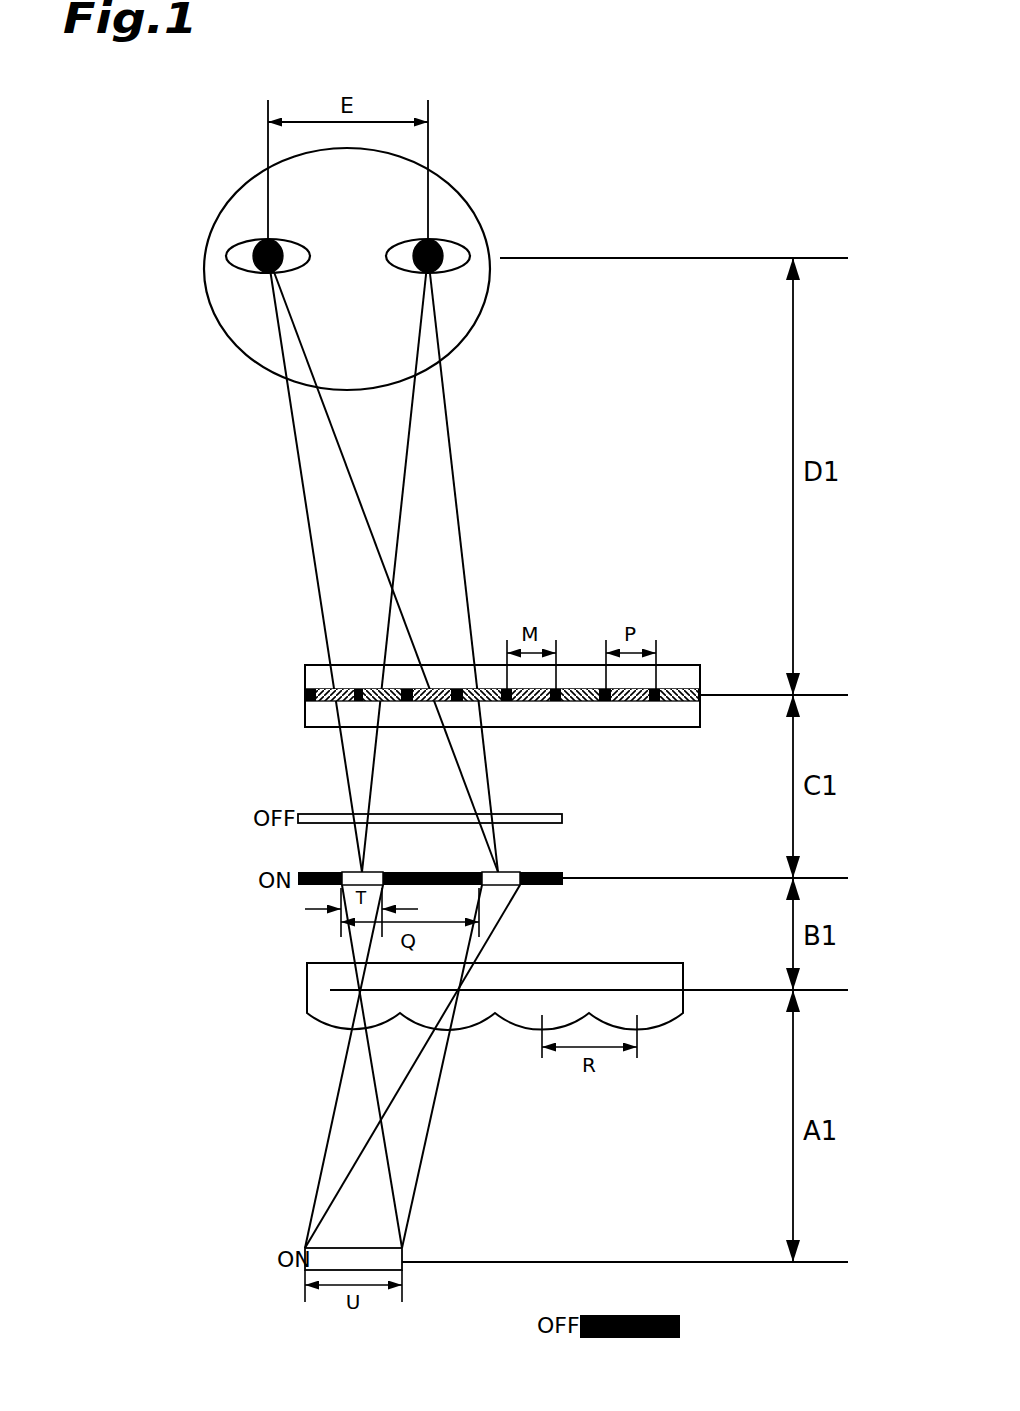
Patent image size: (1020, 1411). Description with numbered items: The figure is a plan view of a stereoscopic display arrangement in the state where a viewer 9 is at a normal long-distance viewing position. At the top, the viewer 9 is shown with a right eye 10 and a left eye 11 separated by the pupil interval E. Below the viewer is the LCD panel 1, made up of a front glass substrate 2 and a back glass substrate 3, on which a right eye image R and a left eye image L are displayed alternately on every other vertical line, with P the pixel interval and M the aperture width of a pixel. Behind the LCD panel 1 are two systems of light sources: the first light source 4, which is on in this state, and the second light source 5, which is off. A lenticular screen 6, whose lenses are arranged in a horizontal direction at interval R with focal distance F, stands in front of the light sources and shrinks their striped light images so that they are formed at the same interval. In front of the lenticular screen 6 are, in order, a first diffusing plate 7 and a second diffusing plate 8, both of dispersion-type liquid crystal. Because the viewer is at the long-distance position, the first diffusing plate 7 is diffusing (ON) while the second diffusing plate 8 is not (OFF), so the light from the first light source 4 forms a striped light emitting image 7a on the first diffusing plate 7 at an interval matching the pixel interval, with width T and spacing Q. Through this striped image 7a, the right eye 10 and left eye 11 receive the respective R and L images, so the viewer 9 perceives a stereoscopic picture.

The LCD panel 1 is at (296, 672).
The front glass substrate 2 is at (690, 680).
The back glass substrate 3 is at (690, 728).
The first light source 4 is at (402, 1257).
The second light source 5 is at (680, 1316).
The lenticular screen 6 is at (687, 983).
The first diffusing plate 7 is at (563, 878).
The striped light emitting image 7a is at (360, 878).
The second diffusing plate 8 is at (563, 819).
The viewer 9 is at (469, 318).
The right eye 10 is at (234, 240).
The left eye 11 is at (438, 243).